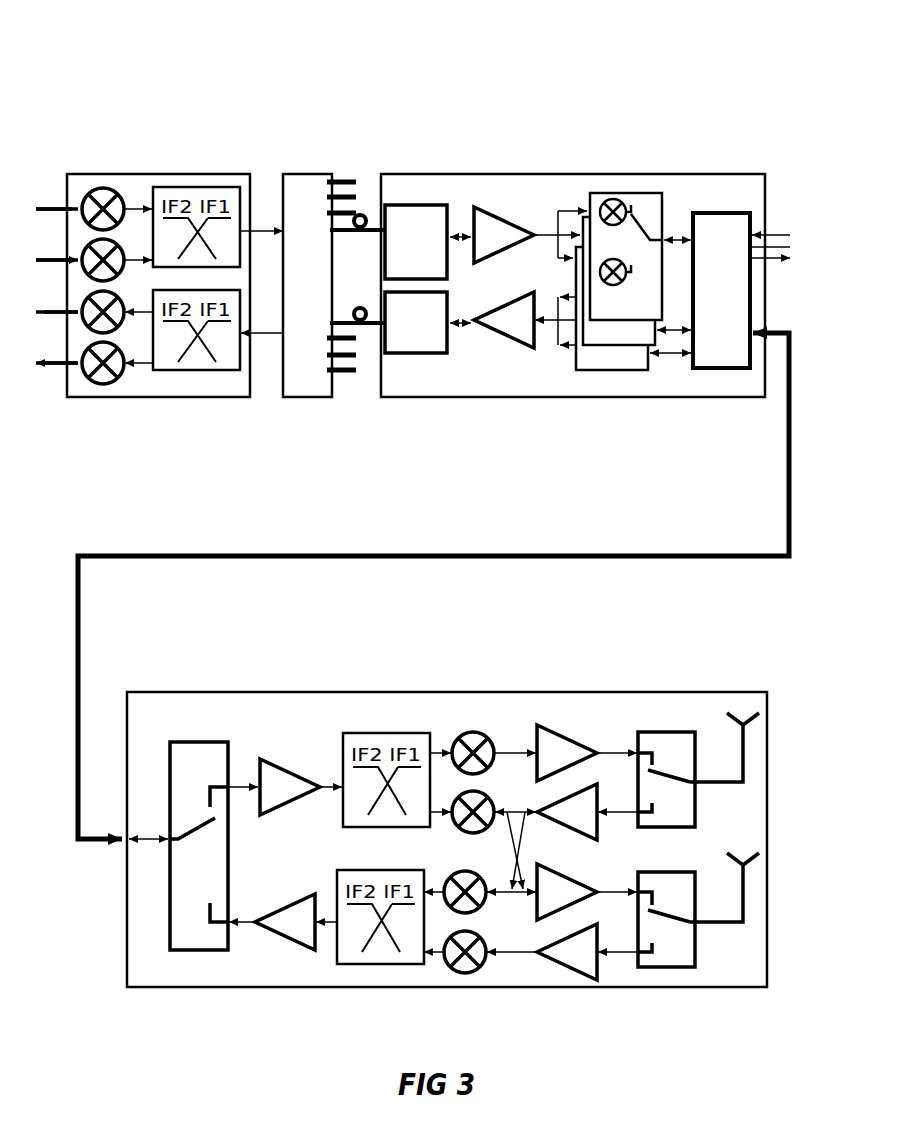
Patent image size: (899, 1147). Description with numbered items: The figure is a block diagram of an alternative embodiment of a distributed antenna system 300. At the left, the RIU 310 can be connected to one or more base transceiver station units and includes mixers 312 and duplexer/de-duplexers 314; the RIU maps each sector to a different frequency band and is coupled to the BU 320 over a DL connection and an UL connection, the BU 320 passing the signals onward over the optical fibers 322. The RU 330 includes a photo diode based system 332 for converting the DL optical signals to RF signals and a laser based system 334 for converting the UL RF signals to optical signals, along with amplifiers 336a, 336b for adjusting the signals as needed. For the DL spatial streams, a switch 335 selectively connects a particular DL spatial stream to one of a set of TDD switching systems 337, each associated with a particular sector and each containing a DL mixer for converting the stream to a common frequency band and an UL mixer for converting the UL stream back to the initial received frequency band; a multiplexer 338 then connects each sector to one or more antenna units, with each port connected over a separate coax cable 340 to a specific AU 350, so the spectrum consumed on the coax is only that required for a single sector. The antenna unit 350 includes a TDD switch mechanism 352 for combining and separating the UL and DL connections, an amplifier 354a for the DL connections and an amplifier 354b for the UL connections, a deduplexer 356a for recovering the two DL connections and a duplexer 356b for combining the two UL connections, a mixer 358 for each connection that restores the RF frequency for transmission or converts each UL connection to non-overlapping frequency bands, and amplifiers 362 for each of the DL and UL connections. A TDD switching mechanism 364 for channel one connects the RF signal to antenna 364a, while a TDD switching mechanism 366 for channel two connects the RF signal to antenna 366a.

The distributed antenna system 300 is at (345, 38).
The RIU 310 is at (159, 251).
The mixers 312 is at (103, 186).
The duplexer/de-duplexers 314 is at (232, 187).
The BU 320 is at (326, 257).
The optical fibers 322 is at (355, 180).
The RU 330 is at (581, 255).
The photo diode based system 332 is at (402, 205).
The laser based system 334 is at (397, 355).
The switch 335 is at (558, 212).
The amplifier 336a is at (505, 218).
The amplifier 336b is at (520, 350).
The TDD switching system 337 is at (655, 193).
The multiplexer 338 is at (700, 213).
The cable 340 is at (338, 556).
The antenna unit 350 is at (439, 853).
The TDD switch mechanism 352 is at (202, 742).
The amplifier 354a is at (287, 765).
The amplifier 354b is at (278, 935).
The deduplexer 356a is at (345, 743).
The duplexer 356b is at (352, 965).
The mixer 358 is at (497, 750).
The amplifiers 362 is at (575, 972).
The TDD switching mechanism 364 is at (638, 737).
The antenna 364a is at (745, 720).
The TDD switching mechanism 366 is at (655, 967).
The antenna 366a is at (743, 922).